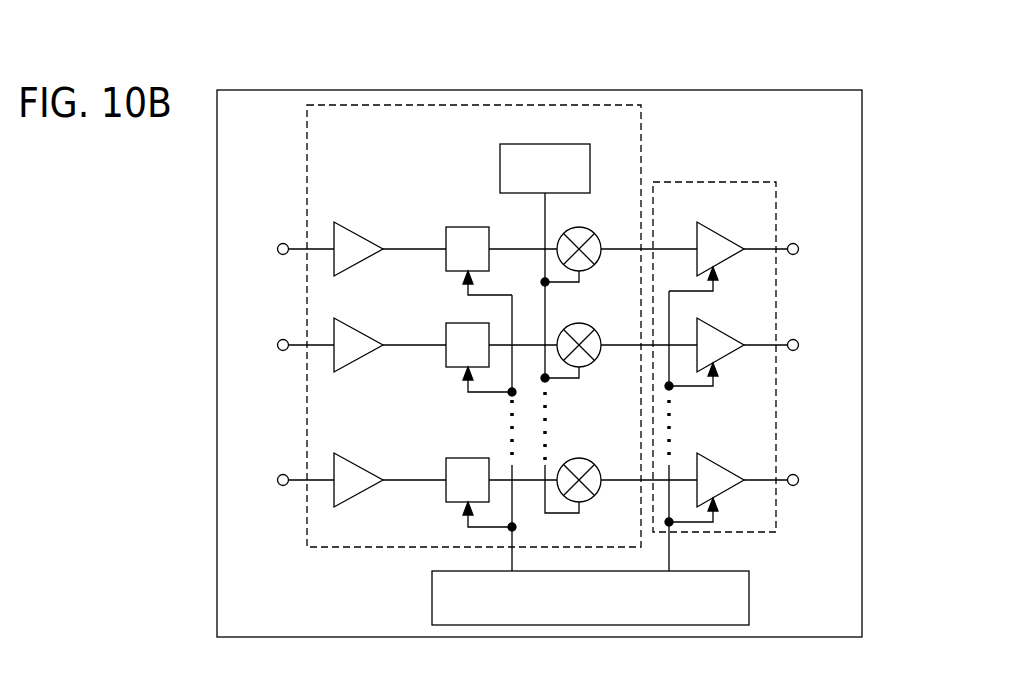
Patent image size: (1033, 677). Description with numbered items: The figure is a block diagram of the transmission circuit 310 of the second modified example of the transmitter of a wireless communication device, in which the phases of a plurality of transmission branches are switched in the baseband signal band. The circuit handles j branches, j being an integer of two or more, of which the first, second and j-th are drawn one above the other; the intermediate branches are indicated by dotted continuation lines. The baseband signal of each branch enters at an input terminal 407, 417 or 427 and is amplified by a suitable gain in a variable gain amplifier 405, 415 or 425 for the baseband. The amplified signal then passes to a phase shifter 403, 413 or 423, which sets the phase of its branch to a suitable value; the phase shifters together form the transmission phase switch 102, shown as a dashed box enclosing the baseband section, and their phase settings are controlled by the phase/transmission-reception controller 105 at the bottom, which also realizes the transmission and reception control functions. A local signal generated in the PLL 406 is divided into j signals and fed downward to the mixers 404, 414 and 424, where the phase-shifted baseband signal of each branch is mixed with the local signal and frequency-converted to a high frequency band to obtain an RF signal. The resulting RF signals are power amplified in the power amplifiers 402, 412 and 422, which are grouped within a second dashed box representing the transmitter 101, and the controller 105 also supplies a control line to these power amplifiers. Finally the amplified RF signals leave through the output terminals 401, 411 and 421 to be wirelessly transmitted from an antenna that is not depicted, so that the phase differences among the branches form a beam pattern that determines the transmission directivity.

The transmission circuit 310 is at (800, 89).
The transmission phase switch 102 is at (641, 105).
The transmitter 101 is at (737, 182).
The PLL 406 is at (565, 144).
The phase/transmission-reception controller 105 is at (749, 590).
The input terminal 407 is at (279, 246).
The variable gain amplifier 405 is at (355, 232).
The phase shifter 403 is at (460, 227).
The mixer 404 is at (592, 230).
The power amplifier 402 is at (708, 228).
The output terminal 401 is at (797, 246).
The input terminal 417 is at (279, 342).
The variable gain amplifier 415 is at (355, 328).
The phase shifter 413 is at (460, 323).
The mixer 414 is at (592, 326).
The power amplifier 412 is at (708, 324).
The output terminal 411 is at (797, 342).
The input terminal 427 is at (279, 477).
The variable gain amplifier 425 is at (355, 463).
The phase shifter 423 is at (460, 458).
The mixer 424 is at (592, 461).
The power amplifier 422 is at (708, 459).
The output terminal 421 is at (797, 477).